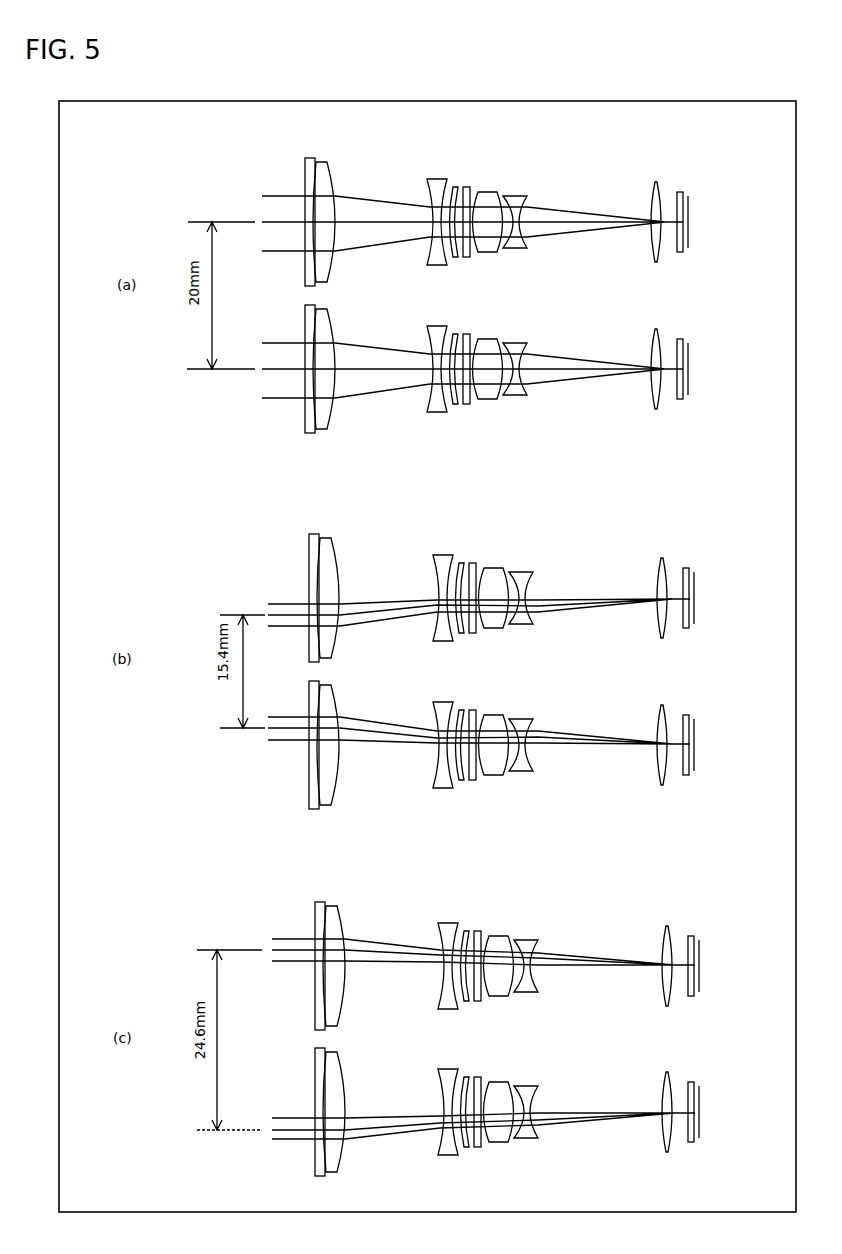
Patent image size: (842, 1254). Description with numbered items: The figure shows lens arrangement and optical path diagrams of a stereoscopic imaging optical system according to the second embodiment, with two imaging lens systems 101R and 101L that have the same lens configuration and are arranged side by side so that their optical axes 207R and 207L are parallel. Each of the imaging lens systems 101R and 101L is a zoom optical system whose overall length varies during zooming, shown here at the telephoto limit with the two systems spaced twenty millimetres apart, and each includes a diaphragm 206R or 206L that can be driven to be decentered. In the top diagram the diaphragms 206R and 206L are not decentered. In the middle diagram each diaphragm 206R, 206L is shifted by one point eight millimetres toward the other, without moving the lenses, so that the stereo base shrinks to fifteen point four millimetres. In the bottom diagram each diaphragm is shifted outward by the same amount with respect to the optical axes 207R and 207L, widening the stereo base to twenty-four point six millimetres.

The imaging lens system 101R is at (323, 210).
The imaging lens system 101L is at (327, 358).
The optical axis 207R is at (390, 222).
The optical axis 207L is at (372, 369).
The diaphragm 206R is at (473, 202).
The diaphragm 206L is at (477, 390).